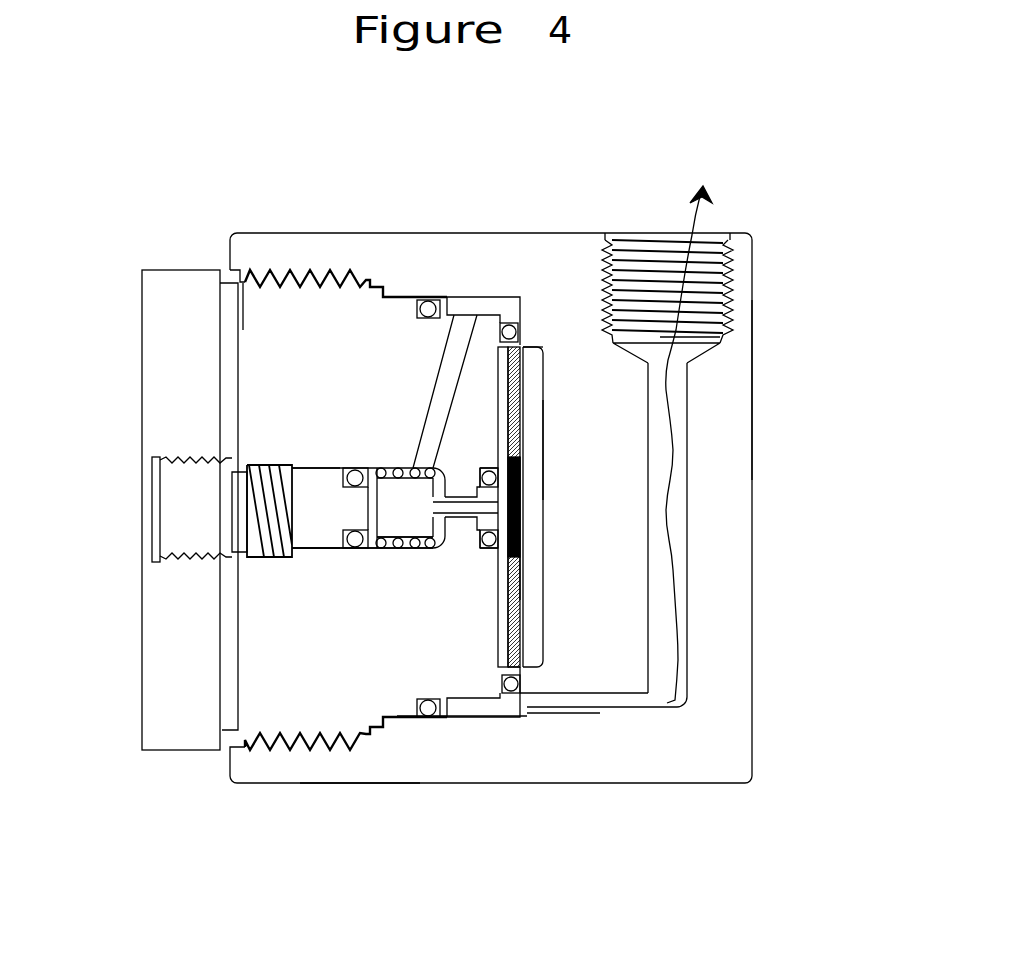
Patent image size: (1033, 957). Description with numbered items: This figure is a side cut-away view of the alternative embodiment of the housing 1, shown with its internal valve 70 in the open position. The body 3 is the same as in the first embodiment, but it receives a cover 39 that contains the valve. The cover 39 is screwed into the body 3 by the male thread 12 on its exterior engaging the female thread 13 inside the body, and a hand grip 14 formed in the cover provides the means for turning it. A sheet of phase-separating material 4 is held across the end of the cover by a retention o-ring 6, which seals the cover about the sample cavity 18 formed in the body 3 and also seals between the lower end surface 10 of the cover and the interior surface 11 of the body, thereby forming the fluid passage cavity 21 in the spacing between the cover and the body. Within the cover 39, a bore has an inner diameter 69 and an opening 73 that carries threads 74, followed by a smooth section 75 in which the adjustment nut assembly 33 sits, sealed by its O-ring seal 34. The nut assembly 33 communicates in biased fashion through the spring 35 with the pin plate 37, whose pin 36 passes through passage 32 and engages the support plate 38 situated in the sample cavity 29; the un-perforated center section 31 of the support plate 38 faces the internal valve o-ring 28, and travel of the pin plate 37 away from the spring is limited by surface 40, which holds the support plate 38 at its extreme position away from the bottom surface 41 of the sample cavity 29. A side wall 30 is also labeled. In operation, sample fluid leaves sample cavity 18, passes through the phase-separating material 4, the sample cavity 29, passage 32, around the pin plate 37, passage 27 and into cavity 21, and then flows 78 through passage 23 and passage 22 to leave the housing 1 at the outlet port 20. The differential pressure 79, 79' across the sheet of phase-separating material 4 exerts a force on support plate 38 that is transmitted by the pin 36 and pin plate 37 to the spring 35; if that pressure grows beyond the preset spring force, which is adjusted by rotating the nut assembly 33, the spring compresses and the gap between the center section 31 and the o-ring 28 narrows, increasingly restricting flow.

The housing 1 is at (723, 213).
The body 3 is at (360, 783).
The sheet of phase-separating material 4 is at (530, 568).
The retention o-ring 6 is at (547, 707).
The lower end surface 10 is at (374, 478).
The interior surface 11 is at (527, 345).
The male thread 12 is at (243, 270).
The female thread 13 is at (355, 275).
The hand grip 14 is at (177, 270).
The sample cavity 18 is at (760, 385).
The outlet port 20 is at (665, 233).
The fluid passage cavity 21 is at (497, 322).
The passage 22 is at (663, 673).
The passage 23 is at (610, 700).
The passage 27 is at (447, 363).
The internal valve o-ring 28 is at (493, 510).
The sample cavity 29 is at (452, 305).
The side wall 30 is at (545, 348).
The center section of support plate 31 is at (530, 452).
The passage 32 is at (268, 375).
The adjustment nut assembly 33 is at (330, 465).
The O-ring seal 34 is at (347, 547).
The spring 35 is at (403, 467).
The pin 36 is at (460, 565).
The pin plate 37 is at (443, 547).
The support plate 38 is at (530, 520).
The cover 39 is at (425, 468).
The surface 40 is at (443, 547).
The bottom surface of sample cavity 41 is at (490, 707).
The inner diameter 69 is at (187, 502).
The valve 70 is at (307, 463).
The opening 73 is at (143, 558).
The threads 74 is at (213, 527).
The smooth section 75 is at (397, 547).
The fluid flow 78 is at (680, 617).
The differential fluid pressure 79 is at (547, 507).
The differential fluid pressure 79' is at (558, 592).